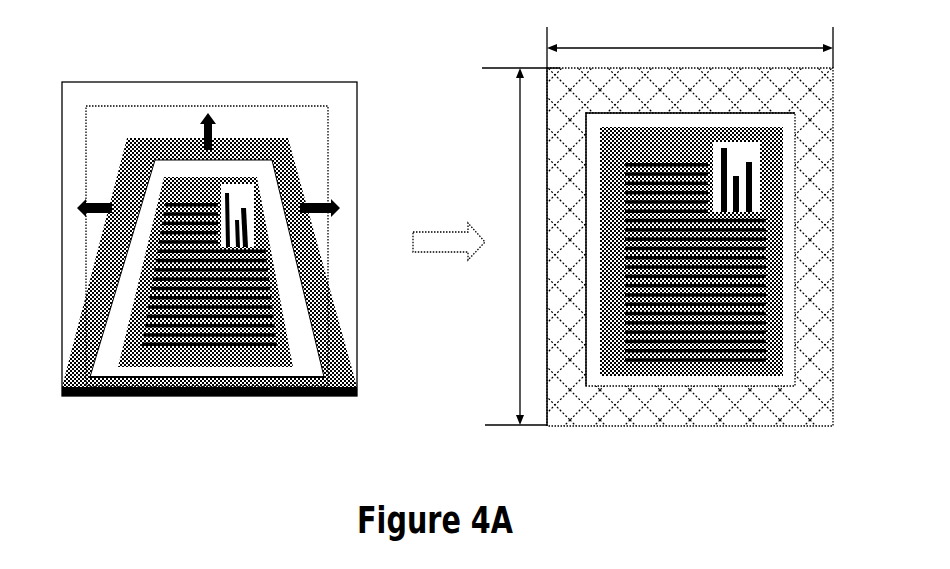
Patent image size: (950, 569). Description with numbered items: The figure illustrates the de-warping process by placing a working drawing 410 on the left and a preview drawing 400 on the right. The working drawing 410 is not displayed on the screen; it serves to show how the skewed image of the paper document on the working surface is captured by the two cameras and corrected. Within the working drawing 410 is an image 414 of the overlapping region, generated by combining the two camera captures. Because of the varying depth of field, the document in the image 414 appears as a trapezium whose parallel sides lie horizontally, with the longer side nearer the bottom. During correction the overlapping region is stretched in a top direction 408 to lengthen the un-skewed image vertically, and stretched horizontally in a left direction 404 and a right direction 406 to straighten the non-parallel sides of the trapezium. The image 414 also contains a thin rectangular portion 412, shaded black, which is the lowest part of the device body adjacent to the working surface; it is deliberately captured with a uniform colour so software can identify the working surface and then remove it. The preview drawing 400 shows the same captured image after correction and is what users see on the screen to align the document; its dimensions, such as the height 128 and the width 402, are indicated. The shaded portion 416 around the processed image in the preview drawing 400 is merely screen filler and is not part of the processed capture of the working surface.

The image height 128 is at (518, 268).
The preview drawing 400 is at (632, 244).
The image width 402 is at (677, 48).
The left direction 404 is at (82, 205).
The right direction 406 is at (330, 206).
The top direction 408 is at (212, 118).
The working drawing 410 is at (214, 420).
The thin rectangular portion 412 is at (300, 392).
The image 414 is at (340, 133).
The shaded portion 416 is at (621, 410).